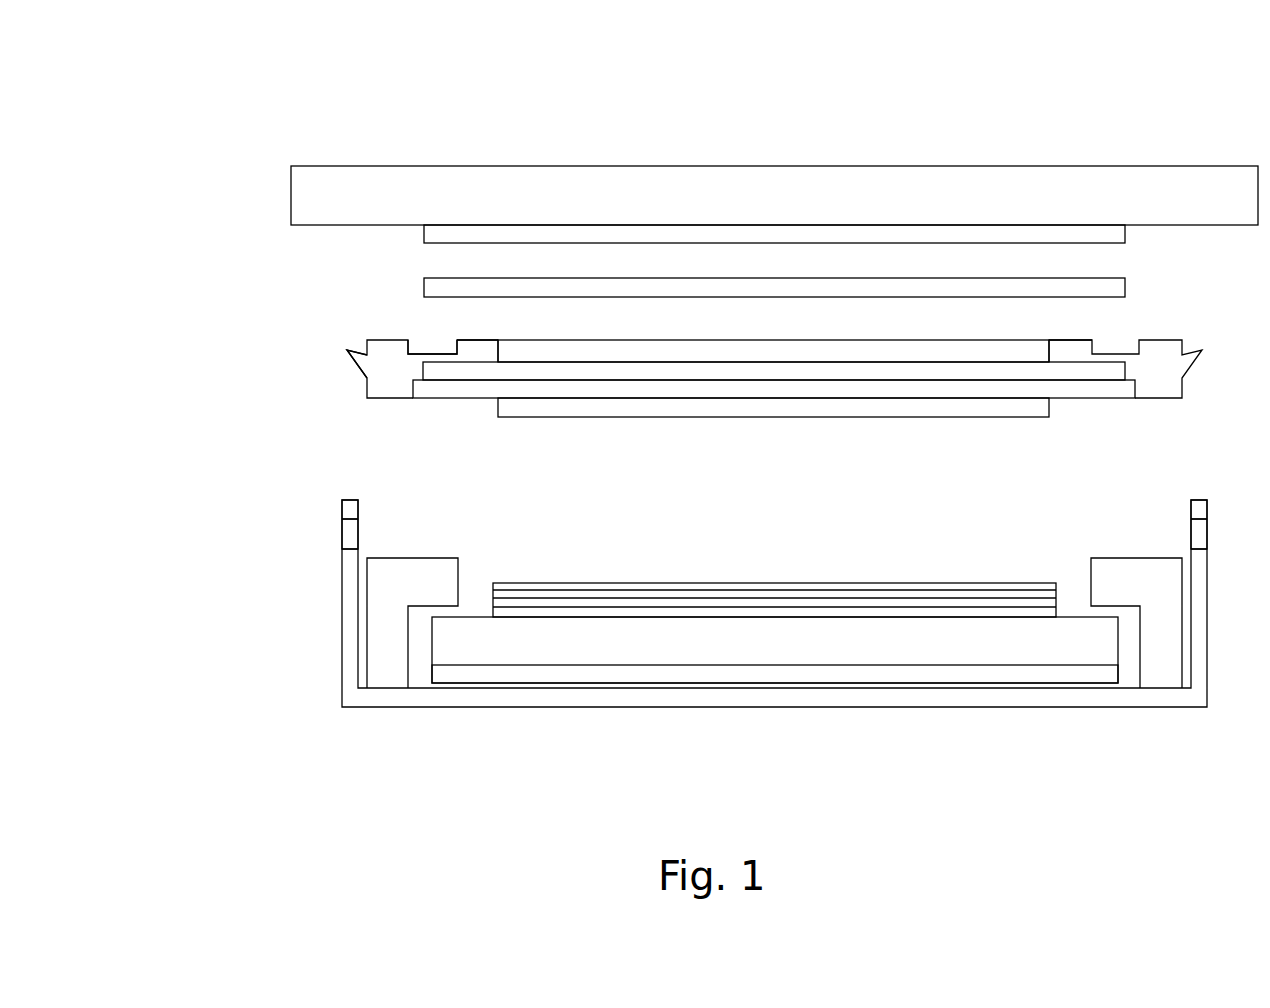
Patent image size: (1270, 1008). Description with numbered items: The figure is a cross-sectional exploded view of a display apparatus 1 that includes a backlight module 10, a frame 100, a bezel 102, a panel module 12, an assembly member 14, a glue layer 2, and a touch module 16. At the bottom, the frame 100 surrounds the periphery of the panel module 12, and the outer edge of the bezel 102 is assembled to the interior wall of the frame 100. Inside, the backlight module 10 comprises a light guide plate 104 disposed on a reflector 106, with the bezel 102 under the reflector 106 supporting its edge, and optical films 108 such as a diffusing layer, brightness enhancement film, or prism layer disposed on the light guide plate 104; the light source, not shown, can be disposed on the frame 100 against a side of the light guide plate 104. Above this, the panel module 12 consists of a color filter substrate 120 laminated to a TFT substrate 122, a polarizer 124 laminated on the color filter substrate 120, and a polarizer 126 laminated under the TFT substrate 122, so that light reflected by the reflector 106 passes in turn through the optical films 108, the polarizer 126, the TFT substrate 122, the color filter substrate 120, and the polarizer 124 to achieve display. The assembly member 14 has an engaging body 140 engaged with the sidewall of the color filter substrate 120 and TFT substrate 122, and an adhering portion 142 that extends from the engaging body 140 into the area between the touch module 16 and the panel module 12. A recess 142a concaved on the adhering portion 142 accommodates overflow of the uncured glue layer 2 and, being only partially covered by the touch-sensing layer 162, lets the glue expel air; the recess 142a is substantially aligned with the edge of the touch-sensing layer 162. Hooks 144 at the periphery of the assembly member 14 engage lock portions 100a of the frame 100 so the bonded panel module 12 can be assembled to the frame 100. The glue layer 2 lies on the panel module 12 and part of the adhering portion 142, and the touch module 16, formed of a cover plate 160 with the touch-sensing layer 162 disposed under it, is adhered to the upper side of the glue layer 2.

The display apparatus 1 is at (262, 114).
The glue layer 2 is at (592, 290).
The backlight module 10 is at (724, 712).
The panel module 12 is at (970, 467).
The assembly member 14 is at (1162, 353).
The touch module 16 is at (1110, 102).
The frame 100 is at (348, 672).
The lock portion 100a is at (348, 533).
The bezel 102 is at (383, 672).
The light guide plate 104 is at (1073, 643).
The reflector 106 is at (990, 673).
The optical films 108 is at (560, 562).
The color filter substrate 120 is at (926, 373).
The TFT substrate 122 is at (843, 390).
The polarizer 124 is at (755, 355).
The polarizer 126 is at (676, 407).
The engaging body 140 is at (390, 388).
The adhering portion 142 is at (482, 352).
The recess 142a is at (432, 352).
The hook 144 is at (357, 365).
The cover plate 160 is at (933, 188).
The touch-sensing layer 162 is at (1037, 232).